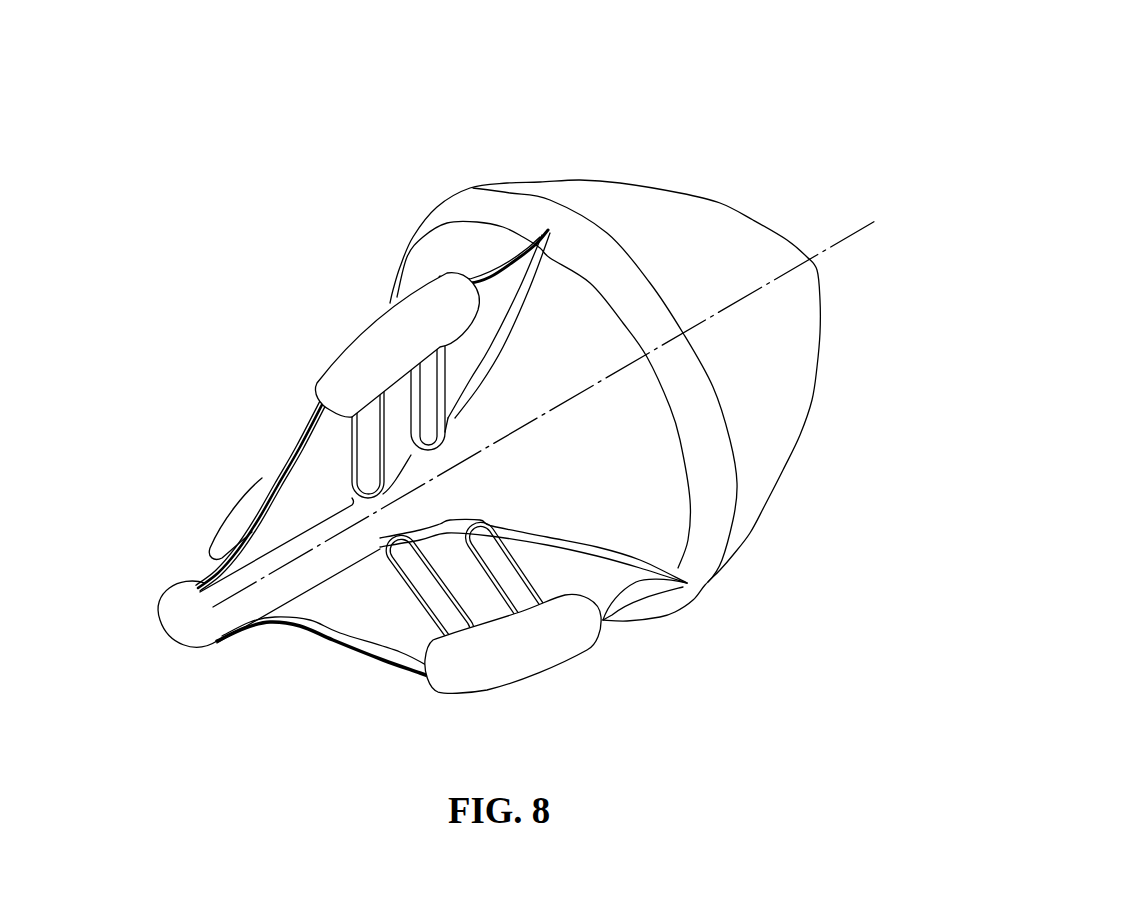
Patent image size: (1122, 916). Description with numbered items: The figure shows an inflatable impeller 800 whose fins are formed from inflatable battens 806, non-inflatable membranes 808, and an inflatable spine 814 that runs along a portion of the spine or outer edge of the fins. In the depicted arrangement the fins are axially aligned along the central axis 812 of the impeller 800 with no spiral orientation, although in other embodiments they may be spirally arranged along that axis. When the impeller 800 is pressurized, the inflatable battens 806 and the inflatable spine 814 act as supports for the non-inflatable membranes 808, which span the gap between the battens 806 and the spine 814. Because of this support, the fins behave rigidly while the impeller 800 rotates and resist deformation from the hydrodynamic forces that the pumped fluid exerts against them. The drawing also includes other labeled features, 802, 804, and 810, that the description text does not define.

The impeller 800 is at (799, 136).
The housing dome 802 is at (747, 368).
The rim opening 804 is at (473, 188).
The inflatable battens 806 is at (370, 453).
The non-inflatable membranes 808 is at (433, 464).
The central spine 810 is at (193, 632).
The central axis 812 is at (837, 247).
The inflatable spine 814 is at (407, 337).